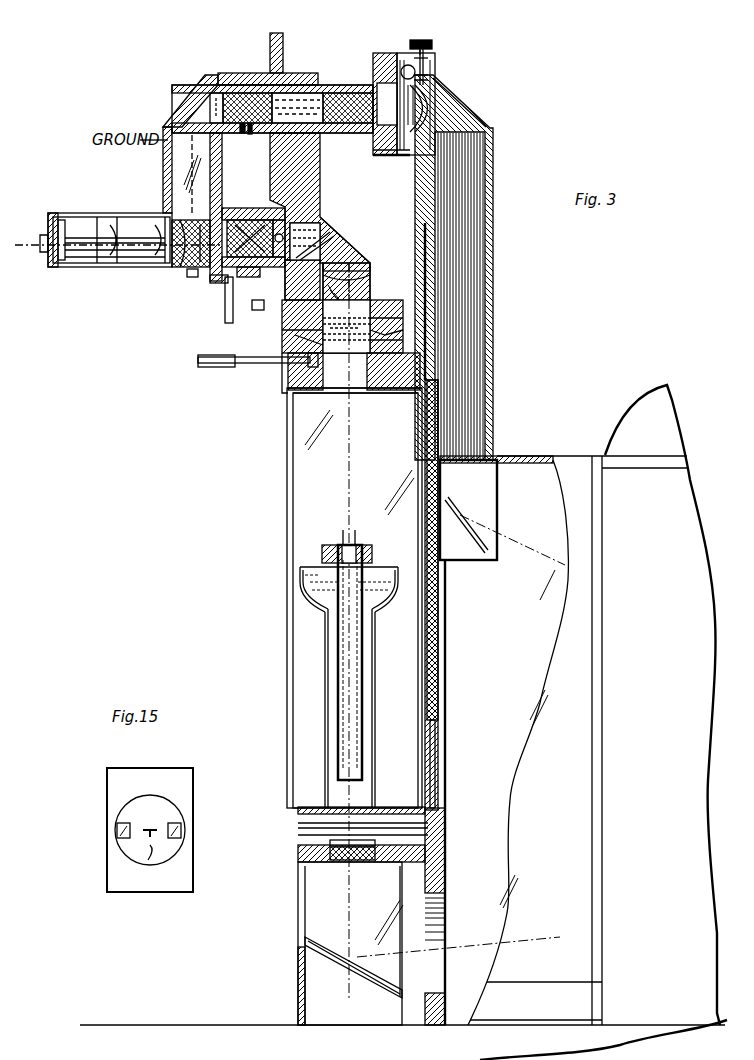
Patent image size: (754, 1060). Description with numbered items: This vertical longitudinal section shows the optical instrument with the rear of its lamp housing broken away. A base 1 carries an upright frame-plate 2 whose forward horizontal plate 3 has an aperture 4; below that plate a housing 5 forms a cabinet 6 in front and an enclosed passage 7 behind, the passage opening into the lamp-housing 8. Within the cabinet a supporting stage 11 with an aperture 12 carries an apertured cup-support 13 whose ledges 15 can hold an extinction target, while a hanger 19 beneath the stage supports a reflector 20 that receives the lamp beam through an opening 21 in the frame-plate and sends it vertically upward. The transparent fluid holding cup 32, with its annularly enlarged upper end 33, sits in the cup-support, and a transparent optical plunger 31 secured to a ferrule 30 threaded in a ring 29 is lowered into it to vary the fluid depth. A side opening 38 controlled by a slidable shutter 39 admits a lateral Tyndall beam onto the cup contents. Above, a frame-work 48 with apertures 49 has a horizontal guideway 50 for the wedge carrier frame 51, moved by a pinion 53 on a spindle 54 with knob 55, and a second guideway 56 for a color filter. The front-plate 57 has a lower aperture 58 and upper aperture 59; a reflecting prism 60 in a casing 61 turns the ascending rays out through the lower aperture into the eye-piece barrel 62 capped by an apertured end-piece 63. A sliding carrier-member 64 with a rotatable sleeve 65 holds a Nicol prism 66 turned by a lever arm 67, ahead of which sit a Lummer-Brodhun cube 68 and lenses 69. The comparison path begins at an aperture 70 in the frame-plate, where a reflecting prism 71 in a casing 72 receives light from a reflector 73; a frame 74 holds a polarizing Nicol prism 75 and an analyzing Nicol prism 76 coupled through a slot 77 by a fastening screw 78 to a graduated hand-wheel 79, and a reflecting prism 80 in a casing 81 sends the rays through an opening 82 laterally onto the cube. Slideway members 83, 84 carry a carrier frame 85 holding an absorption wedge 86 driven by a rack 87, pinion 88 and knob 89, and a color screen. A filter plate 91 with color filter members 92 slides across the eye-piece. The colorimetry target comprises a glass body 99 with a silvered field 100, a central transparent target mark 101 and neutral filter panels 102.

In FIG. 3, the base 1 is at (200, 1025).
In FIG. 3, the frame-plate 2 is at (440, 415).
In FIG. 3, the horizontal plate 3 is at (388, 395).
In FIG. 3, the aperture 4 is at (353, 395).
In FIG. 3, the housing 5 is at (283, 400).
In FIG. 3, the cabinet 6 is at (354, 631).
In FIG. 3, the enclosed passage 7 is at (518, 742).
In FIG. 3, the lamp-housing 8 is at (630, 415).
In FIG. 3, the supporting stage 11 is at (298, 850).
In FIG. 3, the aperture 12 is at (330, 836).
In FIG. 3, the apertured cup-support 13 is at (392, 807).
In FIG. 3, the ways or ledges 15 is at (450, 836).
In FIG. 3, the hanger 19 is at (320, 906).
In FIG. 3, the reflector 20 is at (335, 957).
In FIG. 3, the aperture or opening 21 is at (440, 964).
In FIG. 3, the internally threaded ring 29 is at (374, 552).
In FIG. 3, the ferrule 30 is at (356, 545).
In FIG. 3, the transparent optical plunger 31 is at (362, 650).
In FIG. 3, the transparent fluid holding cup 32 is at (325, 660).
In FIG. 3, the annularly enlarged upper end 33 is at (300, 585).
In FIG. 3, the opening 38 is at (440, 748).
In FIG. 3, the shutter 39 is at (438, 636).
In FIG. 3, the frame-work 48 is at (390, 305).
In FIG. 3, the apertures 49 is at (368, 300).
In FIG. 3, the horizontal guideway 50 is at (405, 335).
In FIG. 3, the carrier frame 51 is at (282, 338).
In FIG. 3, the pinion 53 is at (288, 372).
In FIG. 3, the spindle 54 is at (306, 363).
In FIG. 3, the manipulating knob 55 is at (212, 367).
In FIG. 3, the second guideway 56 is at (405, 318).
In FIG. 3, the front-plate 57 is at (320, 190).
In FIG. 3, the lower horizontal aperture 58 is at (322, 232).
In FIG. 3, the upper horizontal aperture 59 is at (292, 73).
In FIG. 3, the reflecting prism 60 is at (335, 250).
In FIG. 3, the casing 61 is at (368, 262).
In FIG. 3, the eye-piece barrel or frame 62 is at (148, 267).
In FIG. 3, the apertured end-piece 63 is at (48, 262).
In FIG. 3, the carrier-member 64 is at (260, 220).
In FIG. 3, the rotatable sleeve 65 is at (262, 268).
In FIG. 3, the Nicol prism 66 is at (242, 208).
In FIG. 3, the lever arm 67 is at (226, 308).
In FIG. 3, the Lummer-Brodhun cube 68 is at (172, 222).
In FIG. 3, the lenses 69 is at (118, 268).
In FIG. 3, the aperture 70 is at (450, 94).
In FIG. 3, the reflecting prism 71 is at (468, 110).
In FIG. 3, the casing 72 is at (495, 210).
In FIG. 3, the reflector 73 is at (475, 528).
In FIG. 3, the frame 74 is at (376, 53).
In FIG. 3, the polarizing Nicol prism 75 is at (343, 93).
In FIG. 3, the analyzing Nicol prism 76 is at (245, 93).
In FIG. 3, the slot 77 is at (241, 134).
In FIG. 3, the fastening screw 78 is at (251, 136).
In FIG. 3, the hand-wheel 79 is at (270, 42).
In FIG. 3, the reflecting prism 80 is at (195, 105).
In FIG. 3, the casing 81 is at (163, 150).
In FIG. 3, the opening 82 is at (170, 172).
In FIG. 3, the slideway forming member 83 is at (425, 40).
In FIG. 3, the slideway forming member 84 is at (403, 65).
In FIG. 3, the carrier frame 85 is at (400, 156).
In FIG. 3, the absorption wedge 86 is at (425, 108).
In FIG. 3, the rack 87 is at (430, 62).
In FIG. 3, the pinion 88 is at (432, 75).
In FIG. 3, the knob 89 is at (432, 43).
In FIG. 3, the plate 91 is at (61, 218).
In FIG. 3, the color filter members 92 is at (44, 235).
In FIG. 15, the transparent glass body 99 is at (190, 802).
In FIG. 15, the silvered field 100 is at (165, 848).
In FIG. 15, the central transparent target mark 101 is at (150, 860).
In FIG. 15, the neutral filter panels 102 is at (182, 830).